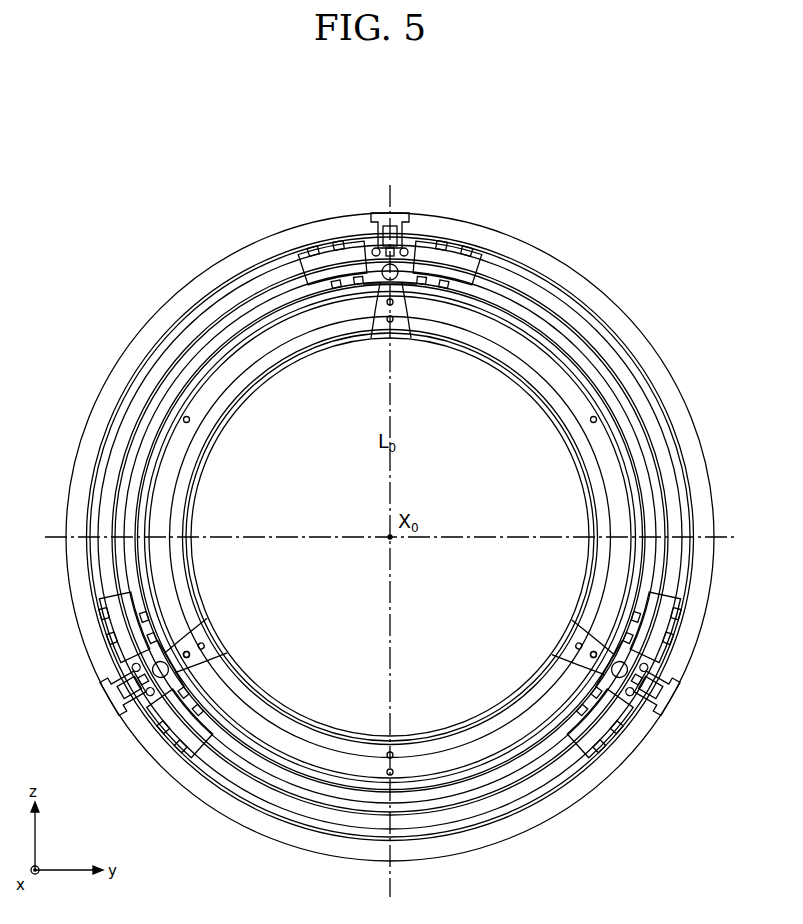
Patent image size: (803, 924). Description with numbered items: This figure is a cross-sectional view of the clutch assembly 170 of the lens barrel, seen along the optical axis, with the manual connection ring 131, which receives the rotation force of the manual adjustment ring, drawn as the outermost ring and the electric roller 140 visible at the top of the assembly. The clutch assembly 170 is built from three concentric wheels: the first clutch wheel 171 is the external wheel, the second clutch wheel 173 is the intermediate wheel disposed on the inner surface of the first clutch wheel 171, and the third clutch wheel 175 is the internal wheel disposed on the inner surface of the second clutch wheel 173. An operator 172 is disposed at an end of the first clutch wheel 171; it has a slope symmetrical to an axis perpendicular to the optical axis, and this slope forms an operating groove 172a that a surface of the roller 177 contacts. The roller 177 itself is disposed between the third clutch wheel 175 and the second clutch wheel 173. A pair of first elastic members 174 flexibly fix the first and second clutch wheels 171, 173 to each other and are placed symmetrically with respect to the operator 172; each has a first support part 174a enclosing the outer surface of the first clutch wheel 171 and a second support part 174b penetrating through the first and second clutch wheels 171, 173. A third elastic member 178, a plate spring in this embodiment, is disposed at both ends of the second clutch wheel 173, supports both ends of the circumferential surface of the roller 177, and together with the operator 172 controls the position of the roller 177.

The manual connection ring 131 is at (663, 377).
The electric roller 140 is at (387, 213).
The clutch assembly 170 is at (705, 268).
The first clutch wheel 171 is at (433, 243).
The operator 172 is at (372, 262).
The operating groove 172a is at (411, 214).
The second clutch wheel 173 is at (522, 312).
The first elastic member 174 is at (178, 162).
The first support part 174a is at (318, 232).
The second support part 174b is at (273, 285).
The third clutch wheel 175 is at (559, 345).
The roller 177 is at (418, 240).
The third elastic member 178 is at (380, 284).